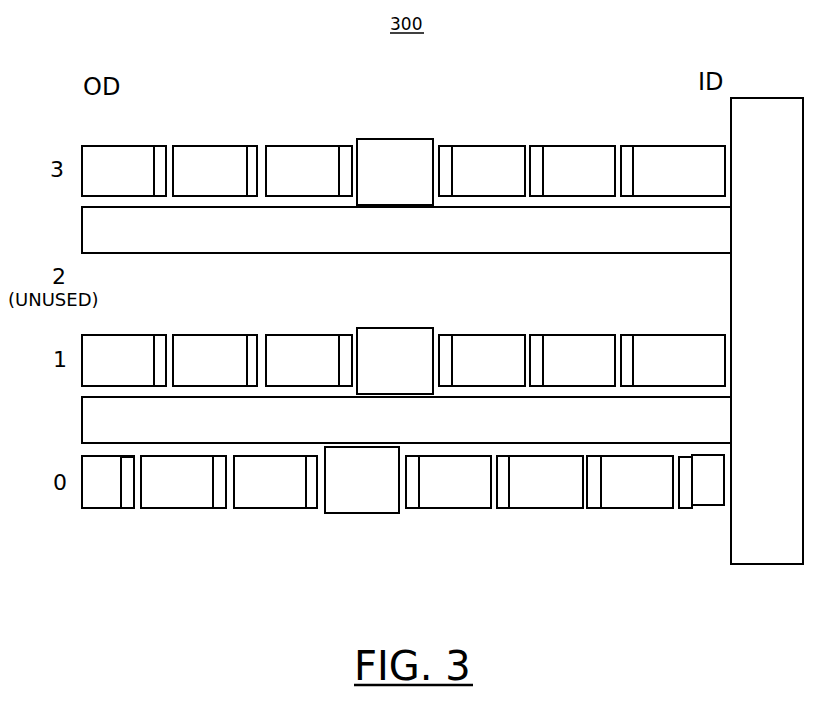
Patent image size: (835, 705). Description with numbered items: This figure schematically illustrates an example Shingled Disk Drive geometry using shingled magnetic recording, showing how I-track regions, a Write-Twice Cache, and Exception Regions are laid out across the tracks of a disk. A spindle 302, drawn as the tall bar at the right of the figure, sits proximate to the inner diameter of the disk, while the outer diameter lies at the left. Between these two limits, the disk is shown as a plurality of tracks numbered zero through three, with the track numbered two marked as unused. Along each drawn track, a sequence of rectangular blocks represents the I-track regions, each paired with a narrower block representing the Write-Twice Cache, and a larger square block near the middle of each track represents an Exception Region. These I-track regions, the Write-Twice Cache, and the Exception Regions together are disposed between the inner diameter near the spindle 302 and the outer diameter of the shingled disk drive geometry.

The spindle 302 is at (740, 121).